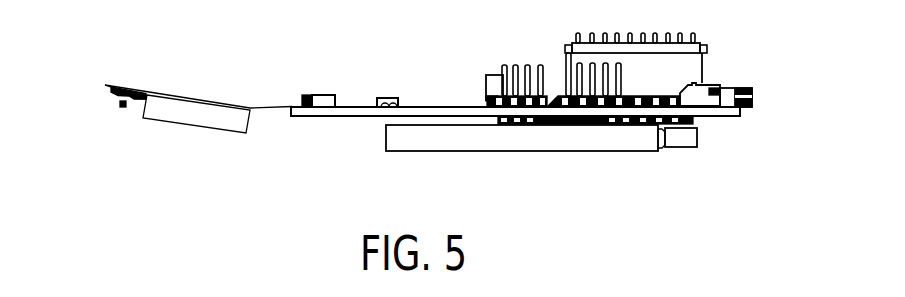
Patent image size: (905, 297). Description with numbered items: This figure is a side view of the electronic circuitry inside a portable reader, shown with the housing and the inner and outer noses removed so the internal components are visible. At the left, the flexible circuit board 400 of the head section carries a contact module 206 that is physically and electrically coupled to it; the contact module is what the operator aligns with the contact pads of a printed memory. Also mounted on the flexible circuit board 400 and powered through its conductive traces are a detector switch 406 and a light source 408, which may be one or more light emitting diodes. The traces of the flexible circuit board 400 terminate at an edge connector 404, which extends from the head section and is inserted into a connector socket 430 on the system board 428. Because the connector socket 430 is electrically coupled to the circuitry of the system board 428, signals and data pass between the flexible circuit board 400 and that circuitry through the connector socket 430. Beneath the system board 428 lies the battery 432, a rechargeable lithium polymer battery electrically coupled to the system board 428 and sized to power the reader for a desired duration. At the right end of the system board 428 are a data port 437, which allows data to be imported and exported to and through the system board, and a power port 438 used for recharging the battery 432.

The contact module 206 is at (210, 120).
The flexible circuit board 400 is at (255, 106).
The edge connector 404 is at (302, 80).
The detector switch 406 is at (113, 91).
The light source 408 is at (140, 97).
The system board 428 is at (445, 108).
The connector socket 430 is at (315, 95).
The battery 432 is at (602, 137).
The data port 437 is at (745, 87).
The power port 438 is at (705, 83).